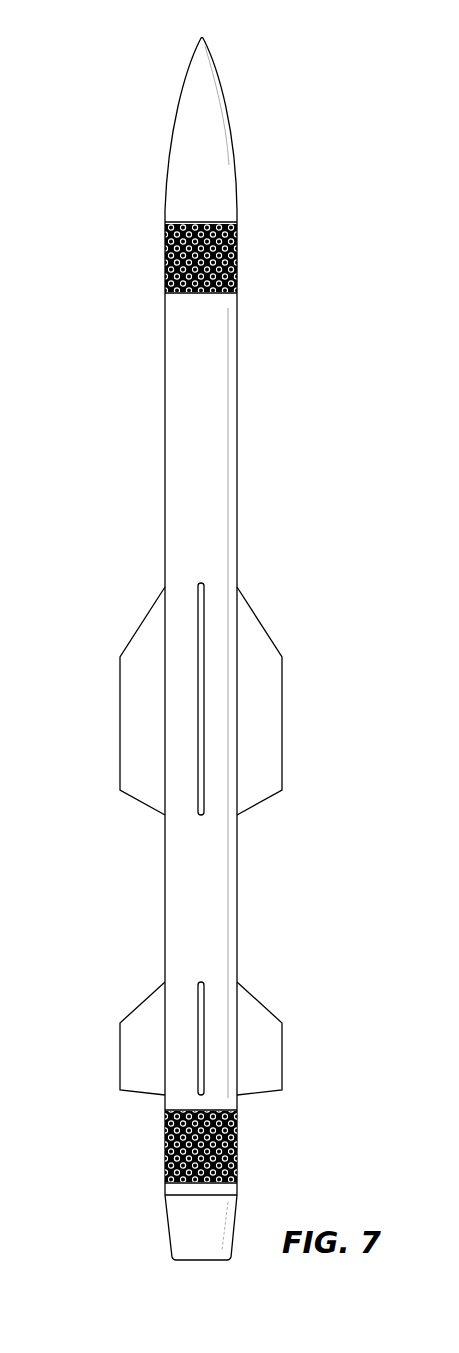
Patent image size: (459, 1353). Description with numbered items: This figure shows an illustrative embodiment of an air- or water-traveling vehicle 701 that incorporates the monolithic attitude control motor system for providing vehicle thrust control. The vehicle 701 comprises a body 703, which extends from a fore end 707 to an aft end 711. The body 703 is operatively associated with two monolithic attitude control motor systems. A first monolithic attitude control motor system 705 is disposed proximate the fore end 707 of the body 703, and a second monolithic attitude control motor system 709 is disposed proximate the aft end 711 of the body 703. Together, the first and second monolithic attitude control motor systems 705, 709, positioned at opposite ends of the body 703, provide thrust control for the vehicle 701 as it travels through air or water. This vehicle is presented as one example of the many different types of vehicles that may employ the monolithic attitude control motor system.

The air- or water-traveling vehicle 701 is at (322, 84).
The body 703 is at (183, 420).
The first monolithic attitude control motor system 705 is at (165, 246).
The fore end 707 is at (158, 85).
The second monolithic attitude control motor system 709 is at (237, 1146).
The aft end 711 is at (142, 1167).